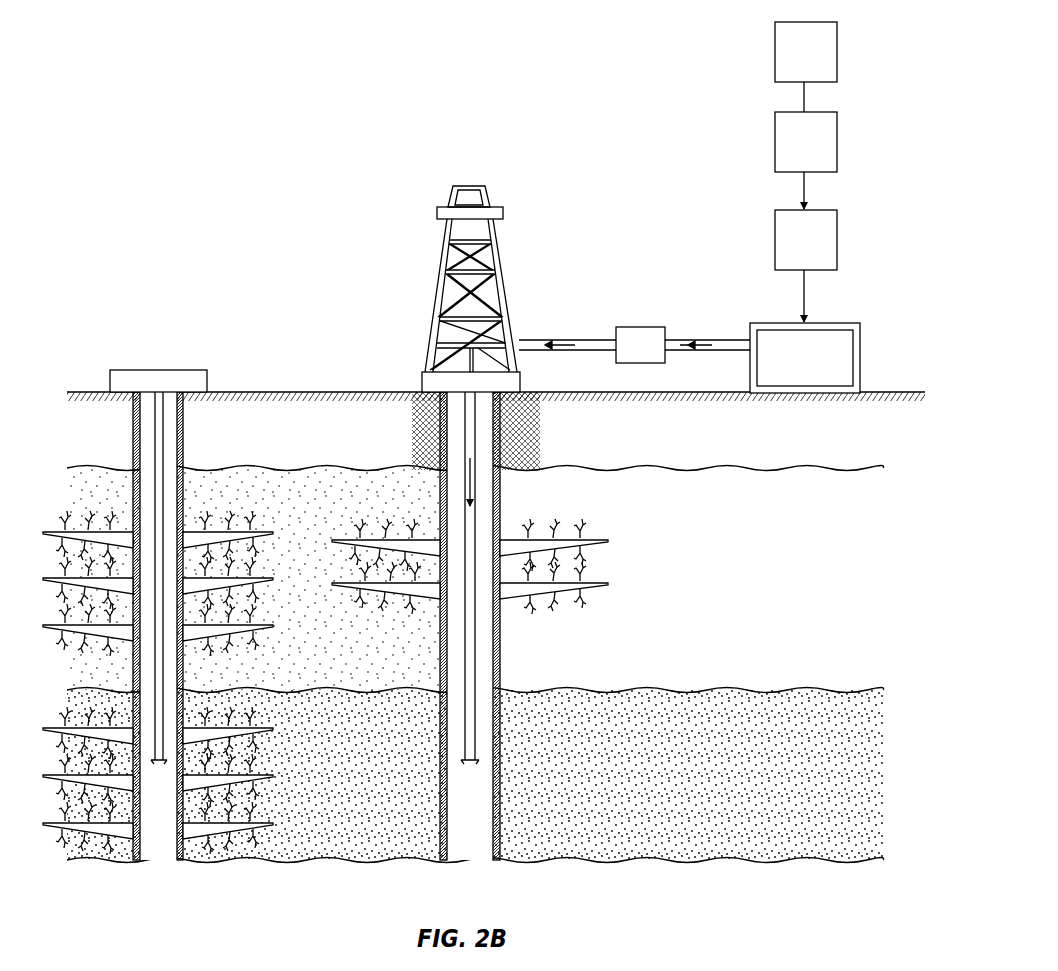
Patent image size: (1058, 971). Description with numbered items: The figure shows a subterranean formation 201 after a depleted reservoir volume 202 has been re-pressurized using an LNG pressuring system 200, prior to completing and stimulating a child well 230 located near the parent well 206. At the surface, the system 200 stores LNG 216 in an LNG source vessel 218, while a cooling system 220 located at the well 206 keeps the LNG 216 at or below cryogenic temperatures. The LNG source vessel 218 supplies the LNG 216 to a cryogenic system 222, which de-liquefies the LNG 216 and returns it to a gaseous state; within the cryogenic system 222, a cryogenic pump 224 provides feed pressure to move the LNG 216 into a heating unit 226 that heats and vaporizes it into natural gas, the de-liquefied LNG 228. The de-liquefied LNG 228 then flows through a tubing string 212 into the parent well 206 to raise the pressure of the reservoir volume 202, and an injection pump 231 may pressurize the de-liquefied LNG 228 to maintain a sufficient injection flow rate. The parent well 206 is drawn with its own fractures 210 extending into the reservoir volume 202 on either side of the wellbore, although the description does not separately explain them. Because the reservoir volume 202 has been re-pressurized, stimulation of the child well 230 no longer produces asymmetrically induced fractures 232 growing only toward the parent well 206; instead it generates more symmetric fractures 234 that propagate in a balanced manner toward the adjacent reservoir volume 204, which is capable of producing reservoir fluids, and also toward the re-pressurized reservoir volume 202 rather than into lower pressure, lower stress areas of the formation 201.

The LNG pressuring system 200 is at (722, 186).
The subterranean formation 201 is at (513, 632).
The reservoir volume 202 is at (908, 468).
The adjacent reservoir volume 204 is at (908, 692).
The parent well 206 is at (456, 456).
The fractures 210 is at (333, 508).
The tubing string 212 is at (480, 462).
The LNG 216 is at (808, 192).
The LNG source vessel 218 is at (786, 155).
The cooling system 220 is at (786, 65).
The cryogenic system 222 is at (886, 210).
The cryogenic pump 224 is at (786, 253).
The heating unit 226 is at (785, 371).
The de-liquefied LNG 228 is at (575, 338).
The child well 230 is at (168, 447).
The injection pump 231 is at (640, 345).
The asymmetrically induced fractures 232 is at (283, 874).
The symmetric fractures 234 is at (43, 874).